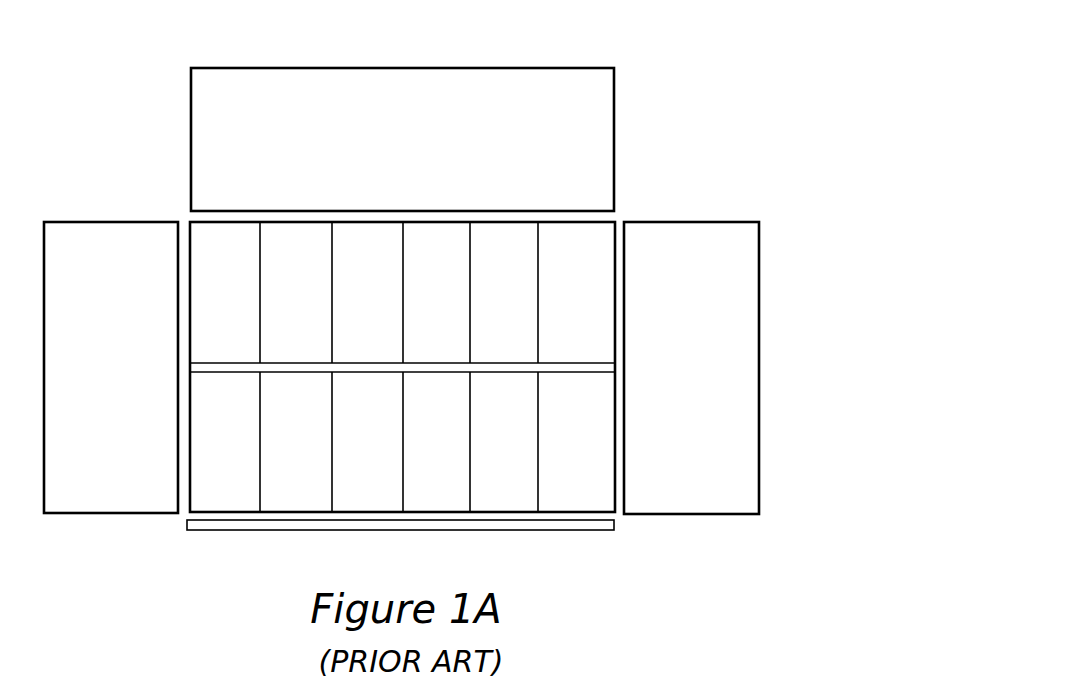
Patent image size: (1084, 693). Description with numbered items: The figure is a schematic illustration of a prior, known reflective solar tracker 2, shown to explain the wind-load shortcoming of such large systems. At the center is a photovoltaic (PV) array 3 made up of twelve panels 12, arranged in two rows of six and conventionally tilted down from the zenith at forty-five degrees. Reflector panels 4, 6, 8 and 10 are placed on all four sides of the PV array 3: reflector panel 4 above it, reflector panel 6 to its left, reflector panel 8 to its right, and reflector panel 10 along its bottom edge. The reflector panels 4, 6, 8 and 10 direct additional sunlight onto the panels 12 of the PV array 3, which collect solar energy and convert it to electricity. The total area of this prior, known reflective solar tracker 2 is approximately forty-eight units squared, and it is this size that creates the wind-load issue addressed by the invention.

The reflective solar tracker 2 is at (677, 85).
The photovoltaic array 3 is at (175, 205).
The reflector panel 4 is at (440, 155).
The reflector panel 6 is at (111, 377).
The reflector panel 8 is at (690, 374).
The reflector panel 10 is at (615, 532).
The panel 12 is at (211, 312).